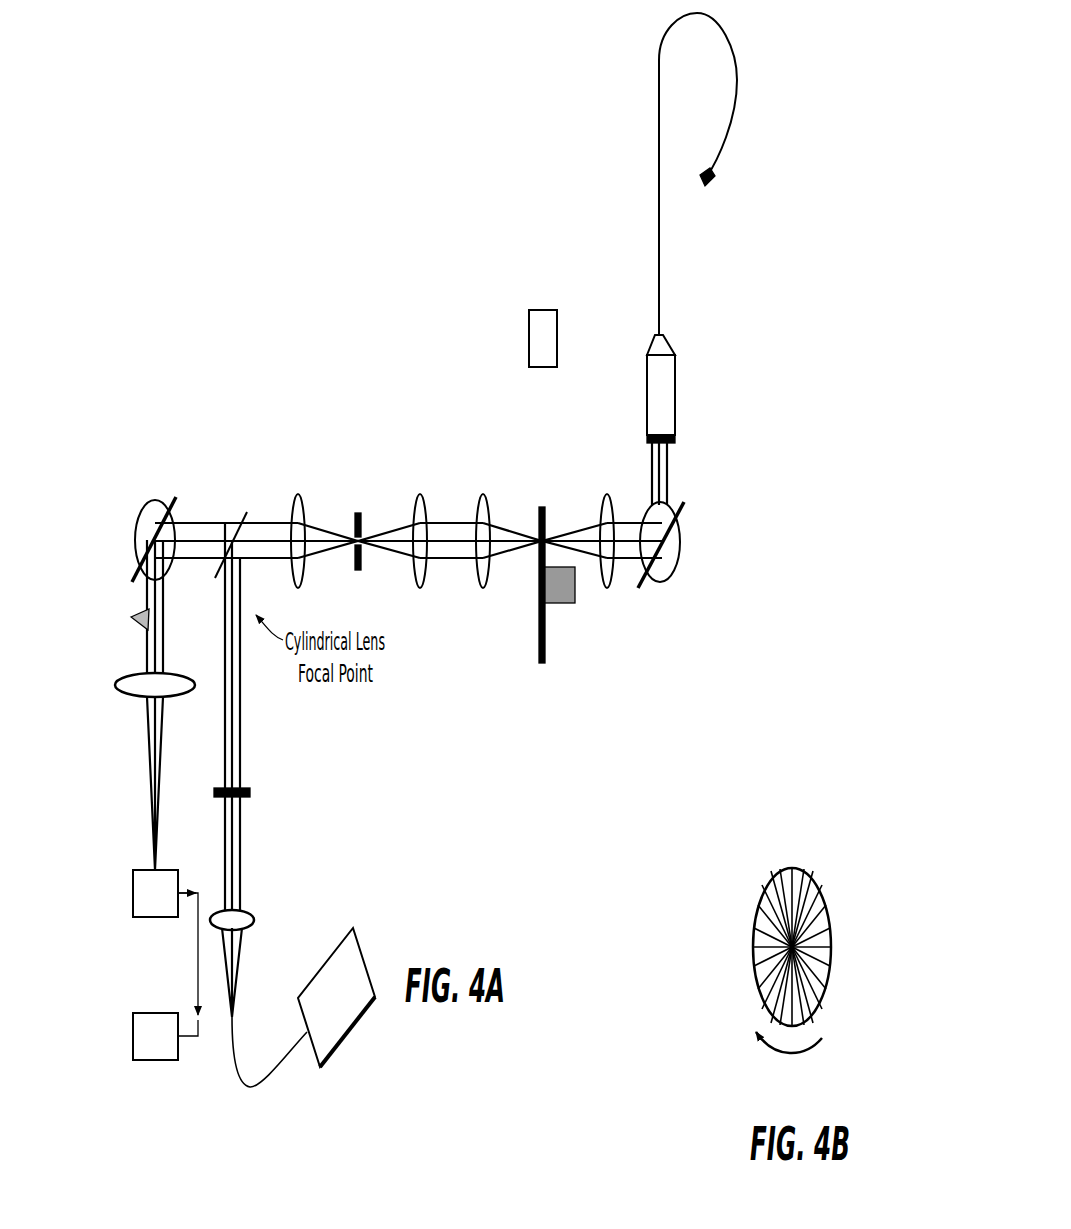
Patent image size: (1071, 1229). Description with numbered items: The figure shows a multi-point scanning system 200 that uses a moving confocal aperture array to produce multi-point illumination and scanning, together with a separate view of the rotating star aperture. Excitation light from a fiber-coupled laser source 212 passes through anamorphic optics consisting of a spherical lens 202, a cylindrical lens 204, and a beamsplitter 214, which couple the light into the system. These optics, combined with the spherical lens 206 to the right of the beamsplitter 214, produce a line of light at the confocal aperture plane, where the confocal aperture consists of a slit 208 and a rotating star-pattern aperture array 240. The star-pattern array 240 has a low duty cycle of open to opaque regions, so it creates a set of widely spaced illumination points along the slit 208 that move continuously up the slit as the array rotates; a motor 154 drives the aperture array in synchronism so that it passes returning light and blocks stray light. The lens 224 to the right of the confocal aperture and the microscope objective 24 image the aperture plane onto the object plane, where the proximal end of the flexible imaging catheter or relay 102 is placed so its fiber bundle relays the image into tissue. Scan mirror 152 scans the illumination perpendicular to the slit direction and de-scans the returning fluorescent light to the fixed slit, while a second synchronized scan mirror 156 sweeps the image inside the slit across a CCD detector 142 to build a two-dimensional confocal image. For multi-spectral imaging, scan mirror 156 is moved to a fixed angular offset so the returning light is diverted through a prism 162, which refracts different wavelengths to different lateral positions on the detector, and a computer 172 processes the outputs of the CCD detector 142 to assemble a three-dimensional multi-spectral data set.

In FIG. 4A, the multi-point scanning system 200 is at (160, 336).
In FIG. 4A, the scan mirror 156 is at (137, 536).
In FIG. 4A, the beamsplitter 214 is at (232, 504).
In FIG. 4A, the spherical lens 206 is at (294, 496).
In FIG. 4A, the slit 208 is at (358, 504).
In FIG. 4A, the rotating star-pattern aperture array 240 is at (541, 506).
In FIG. 4B, the rotating star-pattern aperture array 240 is at (812, 858).
In FIG. 4A, the lens 224 is at (603, 496).
In FIG. 4A, the scan mirror 152 is at (680, 560).
In FIG. 4A, the microscope objective 24 is at (646, 370).
In FIG. 4A, the imaging catheter or relay 102 is at (657, 140).
In FIG. 4A, the motor 154 is at (528, 335).
In FIG. 4A, the prism 162 is at (136, 626).
In FIG. 4A, the CCD detector 142 is at (133, 884).
In FIG. 4A, the computer 172 is at (134, 1028).
In FIG. 4A, the cylindrical lens 204 is at (245, 786).
In FIG. 4A, the spherical lens 202 is at (256, 915).
In FIG. 4A, the fiber-coupled laser source 212 is at (351, 928).